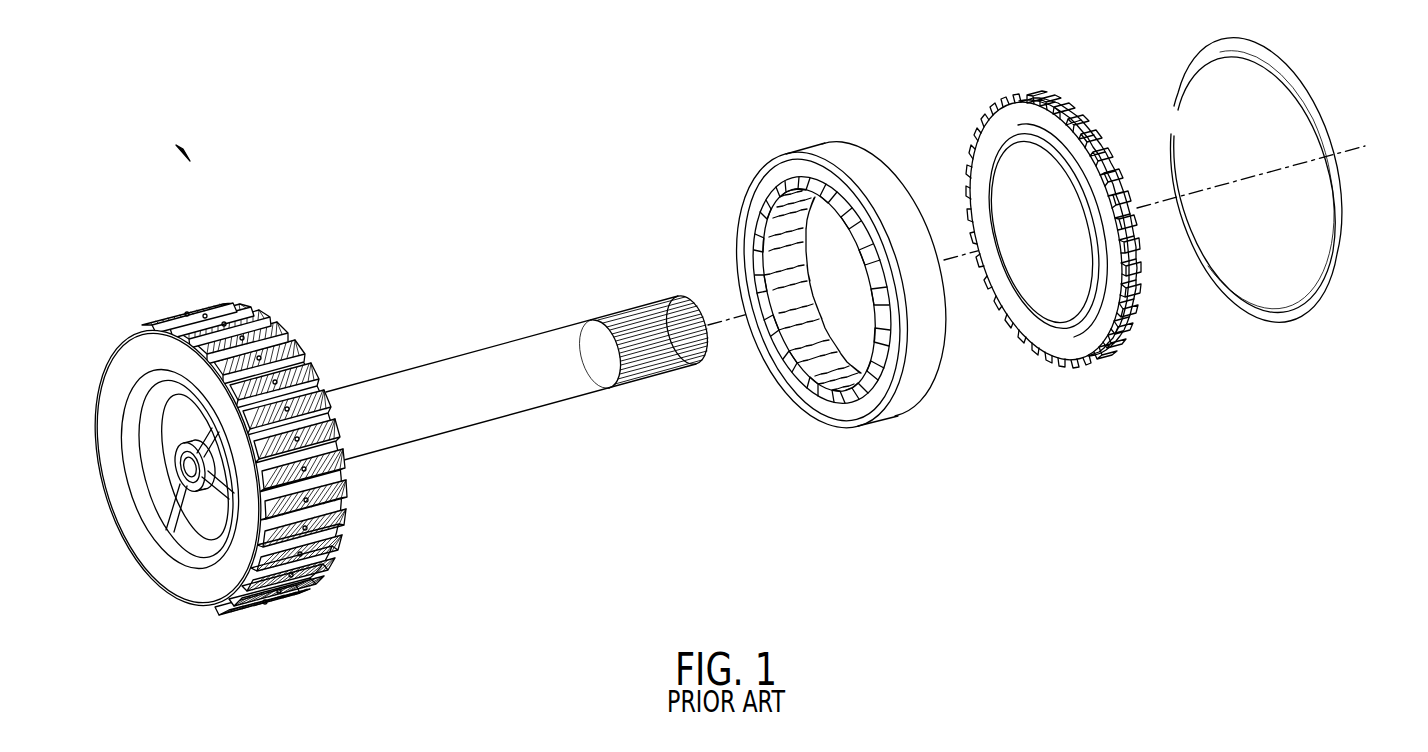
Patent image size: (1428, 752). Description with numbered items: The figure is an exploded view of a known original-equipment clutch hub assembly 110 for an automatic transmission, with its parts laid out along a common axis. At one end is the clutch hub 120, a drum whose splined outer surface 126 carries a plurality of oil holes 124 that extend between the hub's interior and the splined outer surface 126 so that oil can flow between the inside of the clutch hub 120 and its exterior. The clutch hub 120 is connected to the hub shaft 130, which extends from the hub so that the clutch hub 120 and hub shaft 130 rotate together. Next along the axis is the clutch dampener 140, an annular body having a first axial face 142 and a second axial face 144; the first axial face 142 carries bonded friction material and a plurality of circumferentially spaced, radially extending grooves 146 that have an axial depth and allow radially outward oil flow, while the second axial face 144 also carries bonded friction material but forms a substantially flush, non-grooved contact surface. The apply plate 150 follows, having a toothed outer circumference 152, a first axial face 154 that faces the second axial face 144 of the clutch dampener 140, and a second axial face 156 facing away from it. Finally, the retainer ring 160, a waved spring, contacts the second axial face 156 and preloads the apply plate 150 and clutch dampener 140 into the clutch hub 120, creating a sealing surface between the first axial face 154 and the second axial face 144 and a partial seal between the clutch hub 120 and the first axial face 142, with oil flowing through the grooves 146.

The OE 4-5-6 clutch hub assembly 110 is at (180, 154).
The OE clutch hub 120 is at (207, 590).
The oil holes 124 is at (284, 392).
The splined outer surface 126 is at (277, 583).
The OE hub shaft 130 is at (468, 405).
The OE clutch dampener 140 is at (897, 403).
The first axial face 142 is at (775, 180).
The second axial face 144 is at (872, 153).
The grooves 146 is at (760, 267).
The OE apply plate 150 is at (1067, 338).
The toothed outer circumference 152 is at (1047, 93).
The first axial face 154 is at (1067, 158).
The second axial face 156 is at (1130, 332).
The OE retainer ring 160 is at (1343, 212).